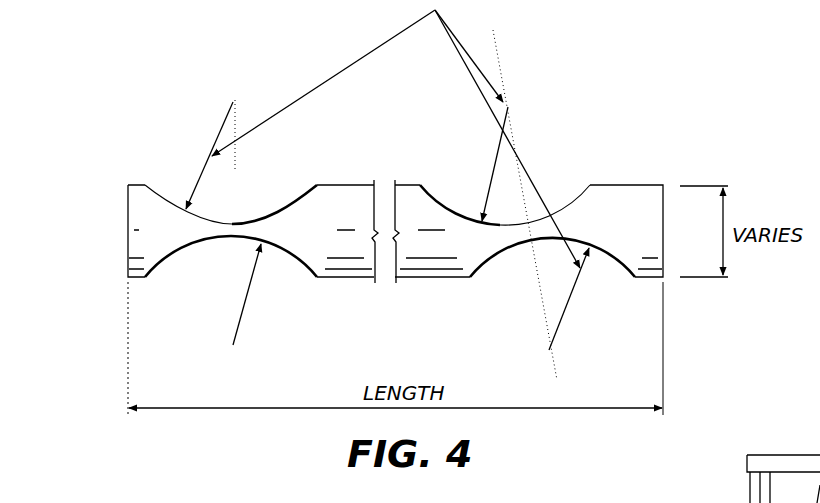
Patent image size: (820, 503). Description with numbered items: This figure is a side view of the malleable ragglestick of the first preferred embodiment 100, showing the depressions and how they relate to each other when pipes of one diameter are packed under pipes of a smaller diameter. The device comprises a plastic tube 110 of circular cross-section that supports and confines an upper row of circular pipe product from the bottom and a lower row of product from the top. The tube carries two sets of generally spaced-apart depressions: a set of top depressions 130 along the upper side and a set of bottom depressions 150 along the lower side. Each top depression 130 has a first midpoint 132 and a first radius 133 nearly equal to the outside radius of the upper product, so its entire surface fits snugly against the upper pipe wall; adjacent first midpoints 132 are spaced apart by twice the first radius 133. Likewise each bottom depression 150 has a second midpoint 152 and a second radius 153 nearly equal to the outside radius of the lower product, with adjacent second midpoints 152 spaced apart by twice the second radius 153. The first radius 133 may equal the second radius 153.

The first preferred embodiment of the malleable ragglestick 100 is at (343, 184).
The plastic tube 110 is at (622, 185).
The top depression 130 is at (566, 196).
The first midpoint 132 is at (233, 224).
The first radius 133 is at (205, 163).
The bottom depression 150 is at (600, 246).
The second midpoint 152 is at (230, 239).
The second radius 153 is at (247, 309).